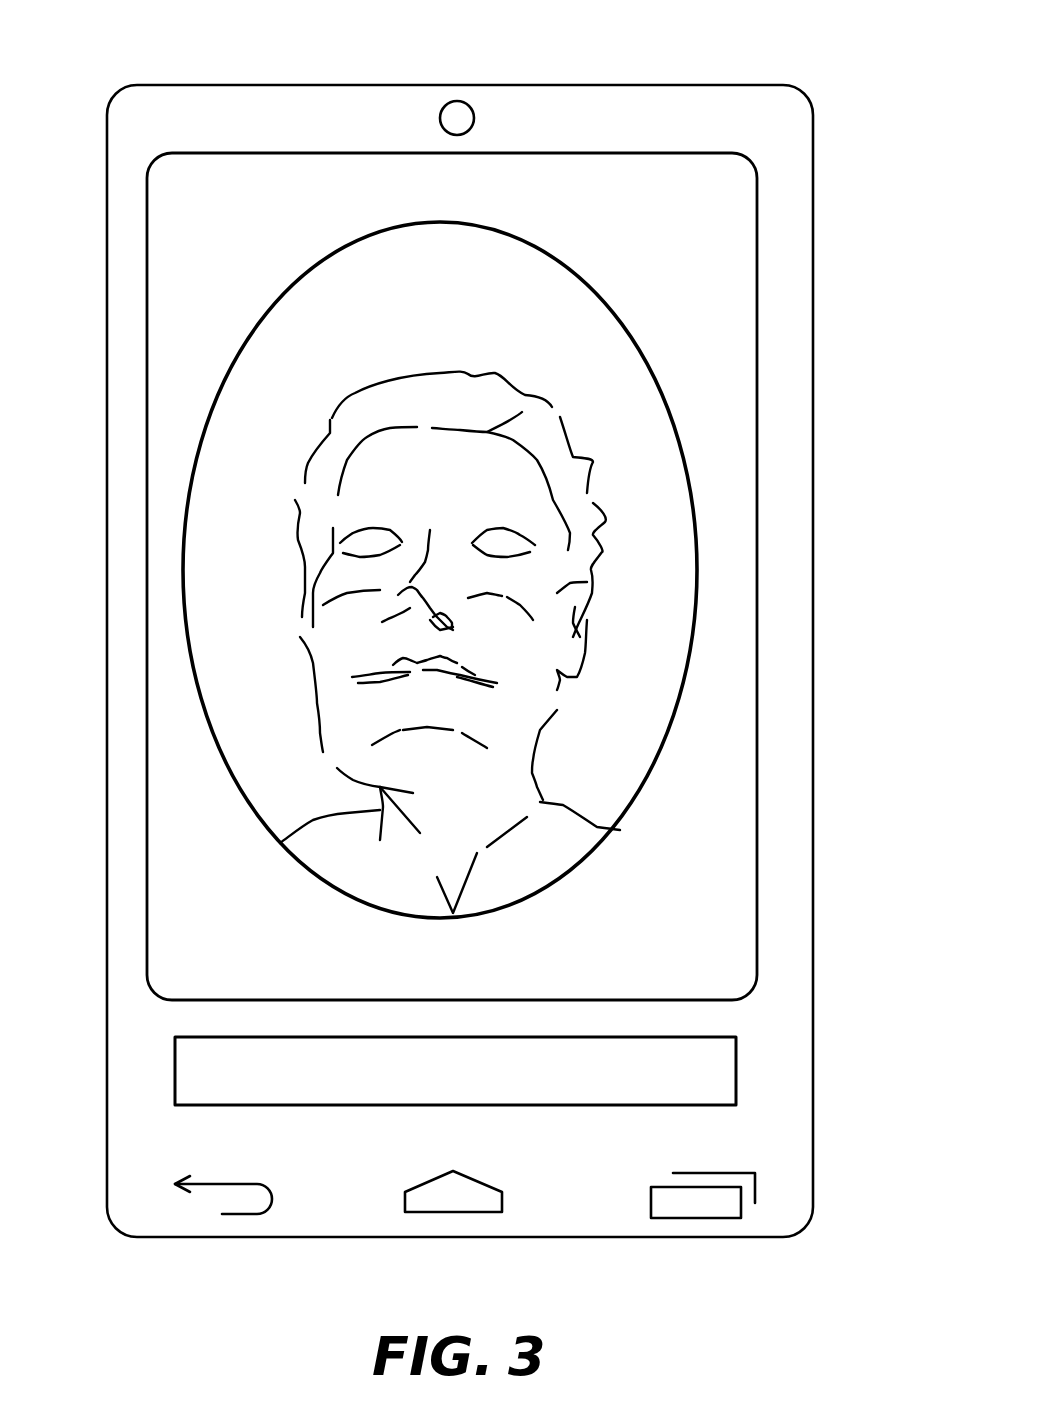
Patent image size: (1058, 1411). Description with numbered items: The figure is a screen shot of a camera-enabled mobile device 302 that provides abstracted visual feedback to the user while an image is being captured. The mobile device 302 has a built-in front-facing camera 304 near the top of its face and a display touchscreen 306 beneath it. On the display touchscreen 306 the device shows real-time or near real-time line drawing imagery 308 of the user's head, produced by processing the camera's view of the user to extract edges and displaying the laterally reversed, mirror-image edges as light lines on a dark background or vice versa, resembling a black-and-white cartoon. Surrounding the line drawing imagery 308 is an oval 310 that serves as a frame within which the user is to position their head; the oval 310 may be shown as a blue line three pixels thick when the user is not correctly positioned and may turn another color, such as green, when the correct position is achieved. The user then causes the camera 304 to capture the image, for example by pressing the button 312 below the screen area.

The mobile device 302 is at (175, 85).
The front-facing camera 304 is at (471, 108).
The display touchscreen 306 is at (758, 332).
The line drawing imagery 308 is at (332, 418).
The oval 310 is at (218, 750).
The button 312 is at (737, 1075).